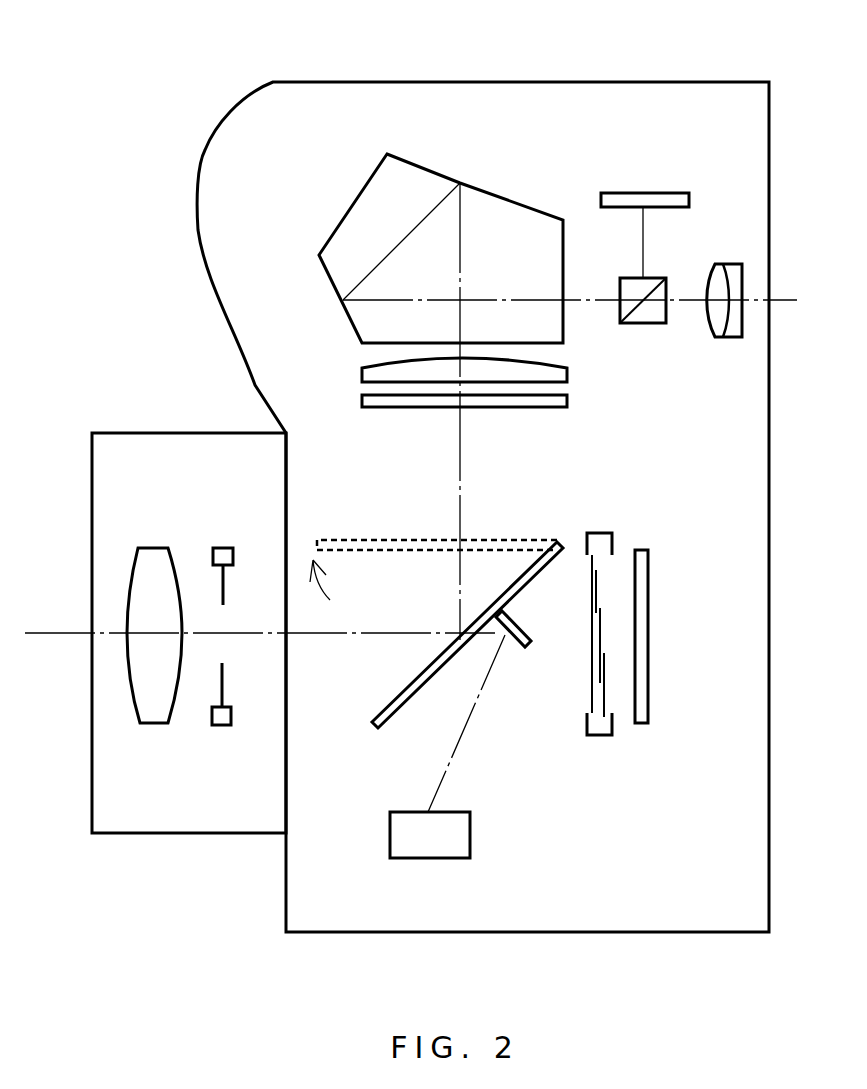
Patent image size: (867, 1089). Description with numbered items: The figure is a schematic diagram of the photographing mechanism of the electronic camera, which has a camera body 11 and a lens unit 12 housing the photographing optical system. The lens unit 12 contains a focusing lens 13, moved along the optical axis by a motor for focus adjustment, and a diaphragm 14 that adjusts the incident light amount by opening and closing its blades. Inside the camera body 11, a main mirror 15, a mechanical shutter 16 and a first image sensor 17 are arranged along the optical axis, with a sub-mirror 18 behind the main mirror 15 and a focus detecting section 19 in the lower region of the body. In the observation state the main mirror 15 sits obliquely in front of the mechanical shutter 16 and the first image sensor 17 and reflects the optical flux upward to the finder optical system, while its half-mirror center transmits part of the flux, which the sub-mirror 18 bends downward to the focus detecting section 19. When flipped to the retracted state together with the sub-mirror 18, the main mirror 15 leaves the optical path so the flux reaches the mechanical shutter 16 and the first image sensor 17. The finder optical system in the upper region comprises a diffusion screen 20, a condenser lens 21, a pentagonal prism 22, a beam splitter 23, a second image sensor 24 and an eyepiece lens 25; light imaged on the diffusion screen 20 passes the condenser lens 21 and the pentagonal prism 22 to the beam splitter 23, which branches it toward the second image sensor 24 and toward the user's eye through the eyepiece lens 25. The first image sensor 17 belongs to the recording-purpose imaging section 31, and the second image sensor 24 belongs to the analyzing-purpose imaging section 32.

The camera body 11 is at (786, 86).
The lens unit 12 is at (87, 833).
The focusing lens 13 is at (150, 548).
The diaphragm 14 is at (223, 548).
The main mirror 15 is at (372, 728).
The mechanical shutter 16 is at (590, 725).
The first image sensor 17 is at (643, 550).
The recording-purpose imaging section 31 is at (682, 600).
The sub-mirror 18 is at (527, 647).
The focus detecting section 19 is at (470, 835).
The diffusion screen 20 is at (512, 407).
The condenser lens 21 is at (362, 370).
The pentagonal prism 22 is at (357, 193).
The beam splitter 23 is at (643, 323).
The second image sensor 24 is at (658, 193).
The analyzing-purpose imaging section 32 is at (668, 202).
The eyepiece lens 25 is at (730, 337).